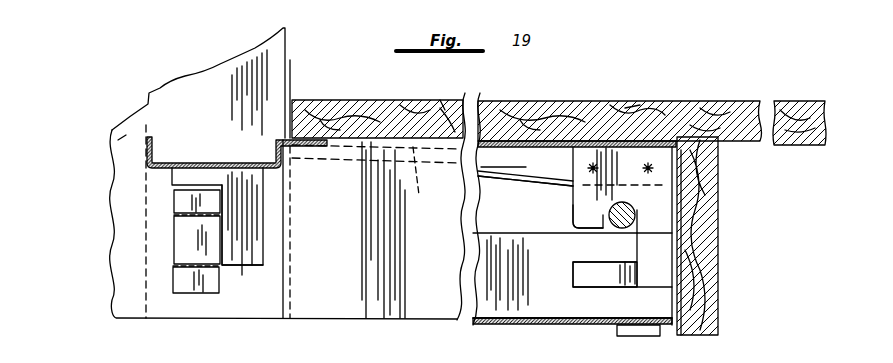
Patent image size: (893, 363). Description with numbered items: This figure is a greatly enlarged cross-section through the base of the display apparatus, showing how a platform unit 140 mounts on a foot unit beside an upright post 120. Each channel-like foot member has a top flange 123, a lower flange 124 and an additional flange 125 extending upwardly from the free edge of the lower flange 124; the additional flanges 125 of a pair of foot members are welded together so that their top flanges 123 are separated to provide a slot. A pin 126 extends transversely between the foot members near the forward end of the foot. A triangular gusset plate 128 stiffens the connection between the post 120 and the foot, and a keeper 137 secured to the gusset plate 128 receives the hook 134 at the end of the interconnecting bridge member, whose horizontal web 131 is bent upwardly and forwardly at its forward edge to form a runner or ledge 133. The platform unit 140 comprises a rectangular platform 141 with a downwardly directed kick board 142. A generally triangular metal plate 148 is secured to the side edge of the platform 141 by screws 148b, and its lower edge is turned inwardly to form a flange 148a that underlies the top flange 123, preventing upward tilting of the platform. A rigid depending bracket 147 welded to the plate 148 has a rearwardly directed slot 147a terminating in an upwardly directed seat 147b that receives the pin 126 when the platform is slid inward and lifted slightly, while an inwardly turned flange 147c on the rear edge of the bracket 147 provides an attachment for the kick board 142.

The upright post 120 is at (185, 77).
The gusset plate 128 is at (132, 133).
The horizontal web 131 is at (204, 163).
The runner or ledge 133 is at (298, 127).
The top flange 123 is at (443, 101).
The platform 141 is at (510, 100).
The screws 148b is at (630, 104).
The platform unit 140 is at (718, 96).
The metal plate 148 is at (540, 187).
The inwardly directed flange 148a is at (502, 186).
The depending bracket 147 is at (572, 219).
The rearwardly directed slot 147a is at (592, 260).
The upwardly directed seat 147b is at (593, 214).
The pin 126 is at (633, 212).
The inwardly turned flange 147c is at (670, 240).
The kick plate or board 142 is at (720, 198).
The hook 134 is at (235, 265).
The keeper 137 is at (210, 290).
The lower flange 124 is at (483, 324).
The additional flange 125 is at (549, 308).